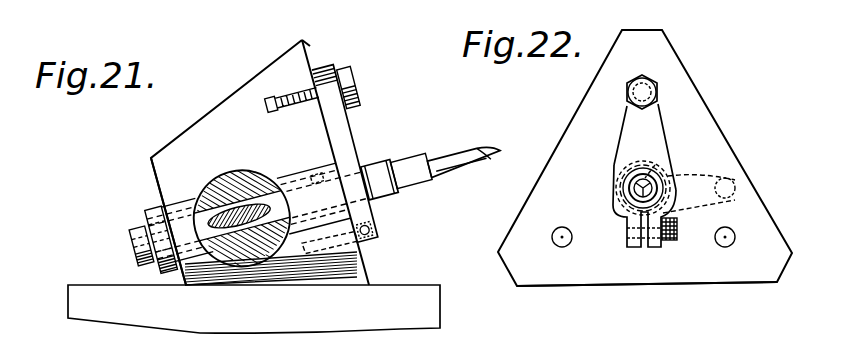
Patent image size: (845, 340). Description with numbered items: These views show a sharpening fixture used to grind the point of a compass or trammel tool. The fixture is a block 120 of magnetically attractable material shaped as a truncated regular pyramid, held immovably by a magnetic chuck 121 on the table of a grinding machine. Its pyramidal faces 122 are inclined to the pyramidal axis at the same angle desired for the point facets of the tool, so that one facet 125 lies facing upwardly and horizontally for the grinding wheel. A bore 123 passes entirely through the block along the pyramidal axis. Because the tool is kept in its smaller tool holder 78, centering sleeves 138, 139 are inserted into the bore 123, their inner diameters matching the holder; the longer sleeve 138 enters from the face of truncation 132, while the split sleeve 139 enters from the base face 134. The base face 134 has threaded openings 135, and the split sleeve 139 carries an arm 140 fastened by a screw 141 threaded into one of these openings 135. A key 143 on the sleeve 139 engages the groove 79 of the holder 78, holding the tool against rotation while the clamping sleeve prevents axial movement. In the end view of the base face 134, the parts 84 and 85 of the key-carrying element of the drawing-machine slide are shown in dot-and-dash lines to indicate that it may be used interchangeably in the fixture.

In FIG. 21, the tool holder 78 is at (385, 203).
In FIG. 22, the tool holder 78 is at (665, 186).
In FIG. 21, the groove 79 is at (231, 171).
In FIG. 22, the groove 79 is at (624, 172).
In FIG. 22, the part of key-carrying element 84 is at (714, 174).
In FIG. 22, the part of key-carrying element 85 is at (738, 175).
In FIG. 21, the block 120 is at (237, 90).
In FIG. 22, the block 120 is at (693, 76).
In FIG. 21, the magnetic chuck 121 is at (432, 305).
In FIG. 21, the pyramidal faces 122 is at (298, 46).
In FIG. 22, the pyramidal faces 122 is at (683, 284).
In FIG. 21, the bore 123 is at (262, 168).
In FIG. 21, the tool facet 125 is at (490, 152).
In FIG. 21, the face of truncation 132 is at (157, 172).
In FIG. 21, the base face 134 is at (307, 60).
In FIG. 22, the base face 134 is at (748, 196).
In FIG. 21, the threaded openings 135 is at (289, 86).
In FIG. 22, the threaded openings 135 is at (646, 78).
In FIG. 21, the centering sleeve 138 is at (198, 198).
In FIG. 21, the split centering sleeve 139 is at (322, 165).
In FIG. 22, the split centering sleeve 139 is at (622, 185).
In FIG. 21, the arm 140 is at (337, 136).
In FIG. 22, the arm 140 is at (627, 126).
In FIG. 21, the screw 141 is at (325, 104).
In FIG. 22, the screw 141 is at (628, 86).
In FIG. 21, the key 143 is at (314, 173).
In FIG. 22, the key 143 is at (655, 165).